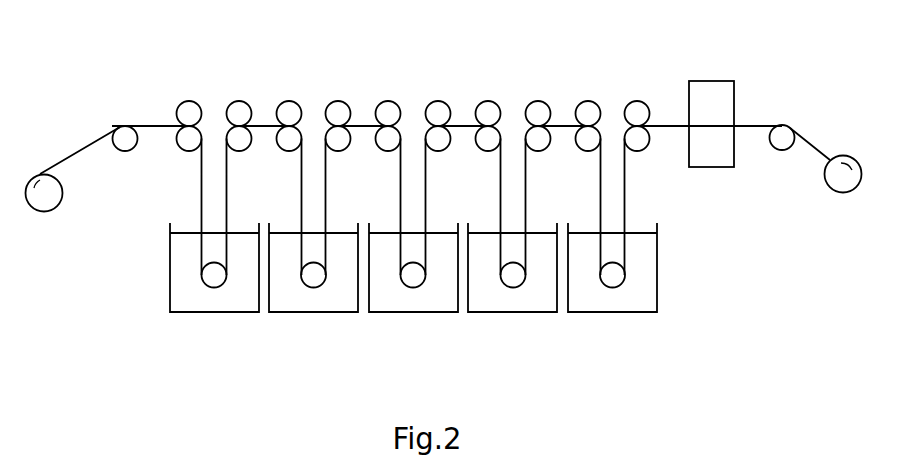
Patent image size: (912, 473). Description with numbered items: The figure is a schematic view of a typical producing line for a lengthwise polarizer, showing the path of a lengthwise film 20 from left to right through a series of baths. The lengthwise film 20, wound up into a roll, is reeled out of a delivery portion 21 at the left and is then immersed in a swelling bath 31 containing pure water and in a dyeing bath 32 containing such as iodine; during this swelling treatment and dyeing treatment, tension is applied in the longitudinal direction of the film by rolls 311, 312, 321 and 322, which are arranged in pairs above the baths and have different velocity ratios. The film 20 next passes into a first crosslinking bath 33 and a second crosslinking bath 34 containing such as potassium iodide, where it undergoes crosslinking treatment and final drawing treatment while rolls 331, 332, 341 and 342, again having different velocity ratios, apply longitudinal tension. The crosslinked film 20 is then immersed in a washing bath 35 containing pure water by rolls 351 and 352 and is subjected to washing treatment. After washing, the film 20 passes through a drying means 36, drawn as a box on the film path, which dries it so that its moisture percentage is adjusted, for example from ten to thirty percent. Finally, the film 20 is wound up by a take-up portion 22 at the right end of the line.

The lengthwise film 20 is at (92, 140).
The delivery portion 21 is at (50, 196).
The take-up portion 22 is at (843, 183).
The swelling bath 31 is at (209, 305).
The dyeing bath 32 is at (315, 305).
The first crosslinking bath 33 is at (415, 305).
The second crosslinking bath 34 is at (515, 305).
The washing bath 35 is at (613, 305).
The drying means 36 is at (710, 92).
The roll 311 is at (186, 108).
The roll 312 is at (237, 107).
The roll 321 is at (288, 107).
The roll 322 is at (337, 107).
The roll 331 is at (387, 107).
The roll 332 is at (437, 107).
The roll 341 is at (487, 103).
The roll 342 is at (537, 103).
The roll 351 is at (588, 103).
The roll 352 is at (637, 103).